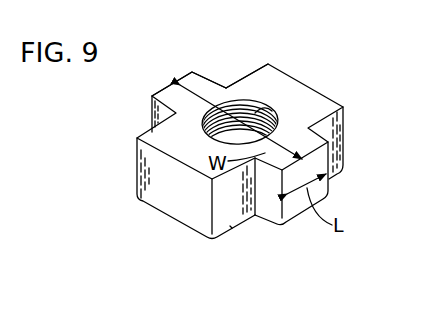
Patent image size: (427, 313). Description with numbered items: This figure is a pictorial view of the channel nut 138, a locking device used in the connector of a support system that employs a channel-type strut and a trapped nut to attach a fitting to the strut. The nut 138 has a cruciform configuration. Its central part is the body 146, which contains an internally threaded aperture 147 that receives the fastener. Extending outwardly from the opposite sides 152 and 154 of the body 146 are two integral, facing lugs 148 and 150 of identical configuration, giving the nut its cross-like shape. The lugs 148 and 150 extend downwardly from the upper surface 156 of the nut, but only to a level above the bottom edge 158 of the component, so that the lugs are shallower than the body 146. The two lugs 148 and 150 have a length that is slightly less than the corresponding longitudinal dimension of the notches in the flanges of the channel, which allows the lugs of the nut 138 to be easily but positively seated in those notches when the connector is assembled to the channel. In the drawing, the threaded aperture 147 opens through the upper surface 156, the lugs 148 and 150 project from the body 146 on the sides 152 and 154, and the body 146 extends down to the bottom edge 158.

The channel nut 138 is at (147, 98).
The body 146 is at (134, 172).
The internally threaded aperture 147 is at (280, 114).
The lug 148 is at (192, 72).
The lug 150 is at (330, 188).
The side of the body 152 is at (250, 69).
The side of the body 154 is at (328, 133).
The upper surface 156 is at (270, 83).
The bottom edge 158 is at (232, 229).